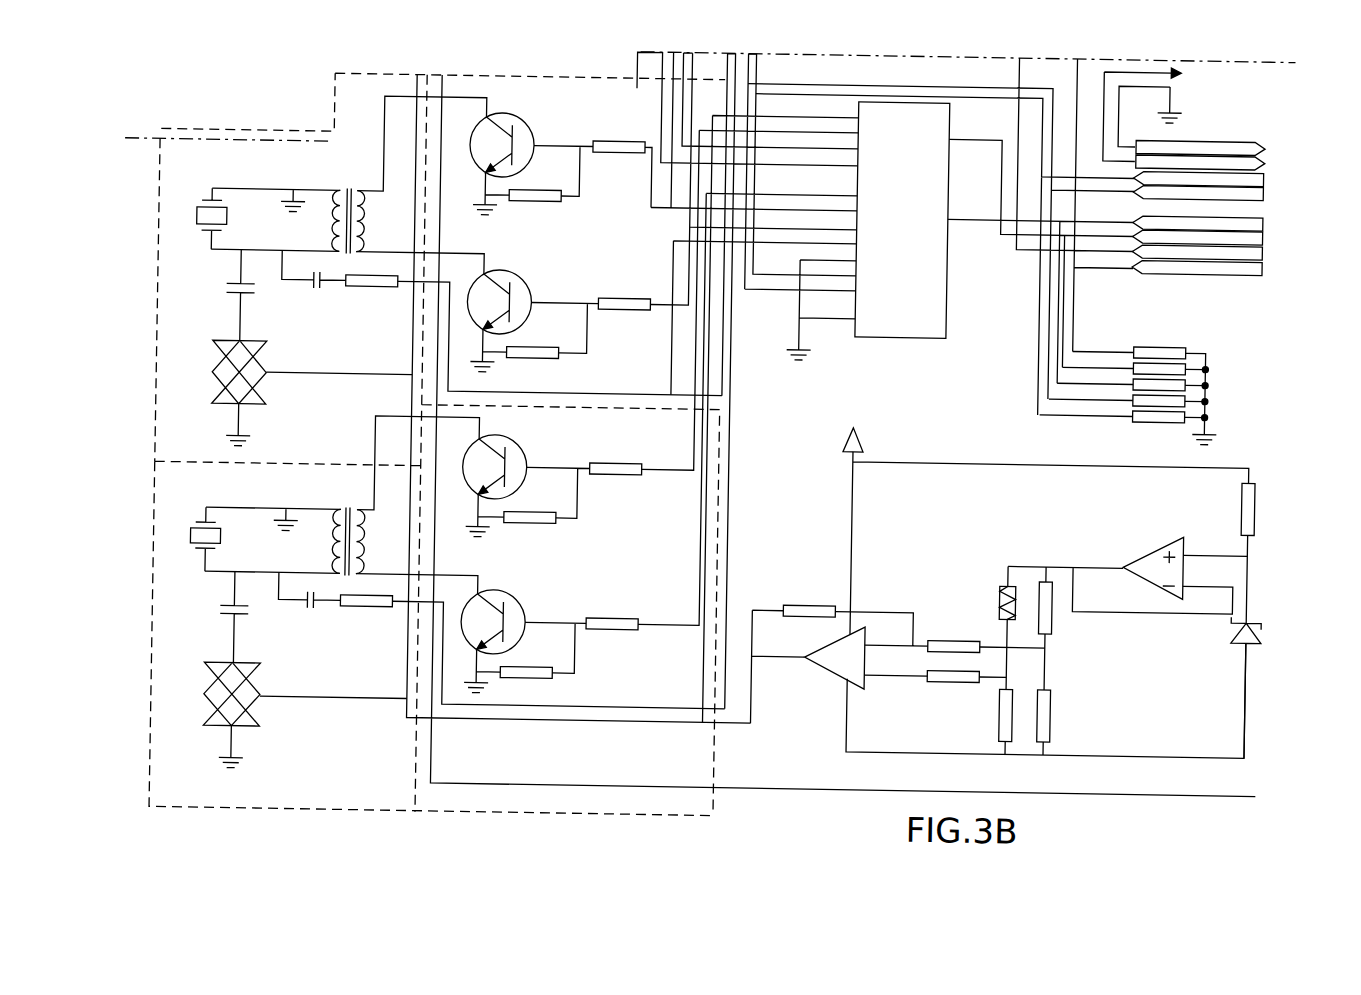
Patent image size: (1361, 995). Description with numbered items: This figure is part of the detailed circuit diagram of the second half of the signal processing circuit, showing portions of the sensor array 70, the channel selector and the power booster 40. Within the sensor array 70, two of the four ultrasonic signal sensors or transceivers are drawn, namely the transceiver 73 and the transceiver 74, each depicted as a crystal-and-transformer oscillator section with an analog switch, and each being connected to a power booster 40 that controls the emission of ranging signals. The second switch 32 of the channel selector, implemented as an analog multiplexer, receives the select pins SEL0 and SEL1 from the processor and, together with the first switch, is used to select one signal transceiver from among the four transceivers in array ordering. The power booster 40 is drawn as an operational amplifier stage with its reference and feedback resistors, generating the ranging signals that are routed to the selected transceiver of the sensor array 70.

The signal transceiver 73 is at (171, 199).
The signal transceiver 74 is at (175, 556).
The sensor array 70 is at (371, 811).
The second switch 32 is at (840, 334).
The power booster 40 is at (691, 761).